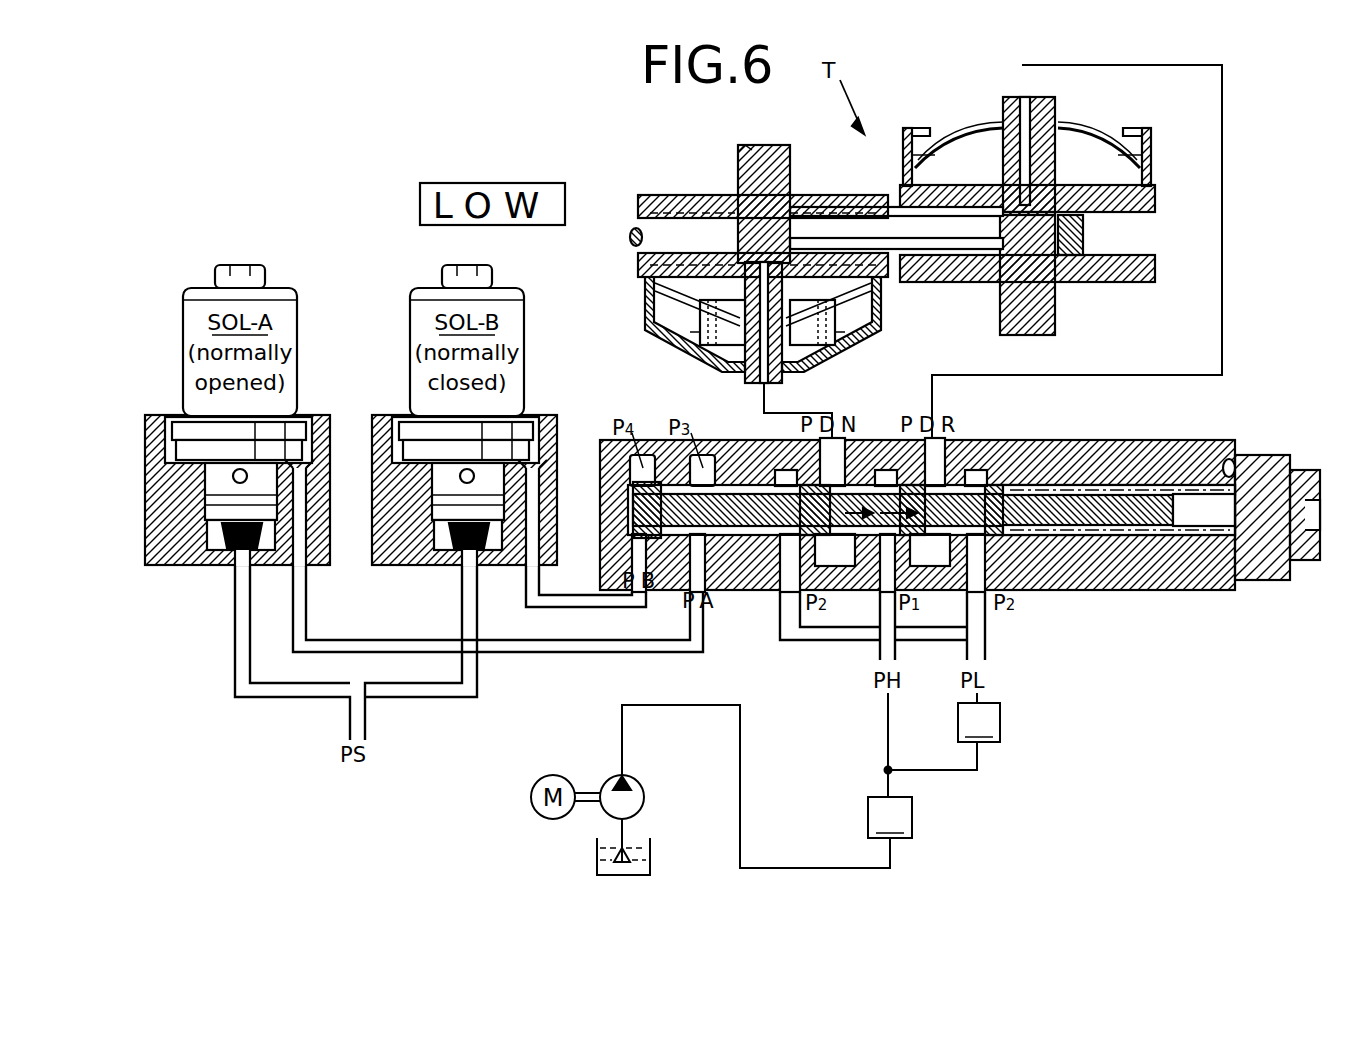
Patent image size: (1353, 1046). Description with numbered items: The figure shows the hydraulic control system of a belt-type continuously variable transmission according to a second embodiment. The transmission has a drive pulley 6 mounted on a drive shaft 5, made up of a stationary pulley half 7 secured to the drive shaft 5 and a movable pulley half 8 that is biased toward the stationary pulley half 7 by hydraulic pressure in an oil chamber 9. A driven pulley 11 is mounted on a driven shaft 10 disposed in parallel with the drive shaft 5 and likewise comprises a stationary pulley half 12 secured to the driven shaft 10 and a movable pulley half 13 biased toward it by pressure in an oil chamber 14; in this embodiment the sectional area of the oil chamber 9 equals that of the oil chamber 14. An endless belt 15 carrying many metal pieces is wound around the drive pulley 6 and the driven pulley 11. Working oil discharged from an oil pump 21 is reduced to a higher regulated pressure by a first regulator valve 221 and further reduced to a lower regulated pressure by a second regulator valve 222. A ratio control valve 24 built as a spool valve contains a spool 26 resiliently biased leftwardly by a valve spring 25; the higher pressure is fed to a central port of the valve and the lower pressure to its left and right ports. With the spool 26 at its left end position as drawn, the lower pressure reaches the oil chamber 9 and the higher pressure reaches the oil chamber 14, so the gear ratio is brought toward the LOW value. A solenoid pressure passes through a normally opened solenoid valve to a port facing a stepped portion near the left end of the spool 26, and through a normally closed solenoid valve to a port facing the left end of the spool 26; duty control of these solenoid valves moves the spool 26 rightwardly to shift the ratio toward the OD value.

The drive shaft 5 is at (1000, 323).
The drive pulley 6 is at (1061, 253).
The stationary pulley half 7 is at (1118, 282).
The movable pulley half 8 is at (1113, 210).
The oil chamber 9 is at (972, 152).
The driven shaft 10 is at (748, 162).
The driven pulley 11 is at (632, 292).
The stationary pulley half 12 is at (840, 197).
The movable pulley half 13 is at (858, 298).
The oil chamber 14 is at (688, 338).
The endless belt 15 is at (630, 238).
The oil pump 21 is at (645, 797).
The ratio control valve 24 is at (960, 487).
The valve spring 25 is at (1228, 460).
The spool 26 is at (934, 510).
The first regulator valve 221 is at (890, 817).
The second regulator valve 222 is at (979, 722).